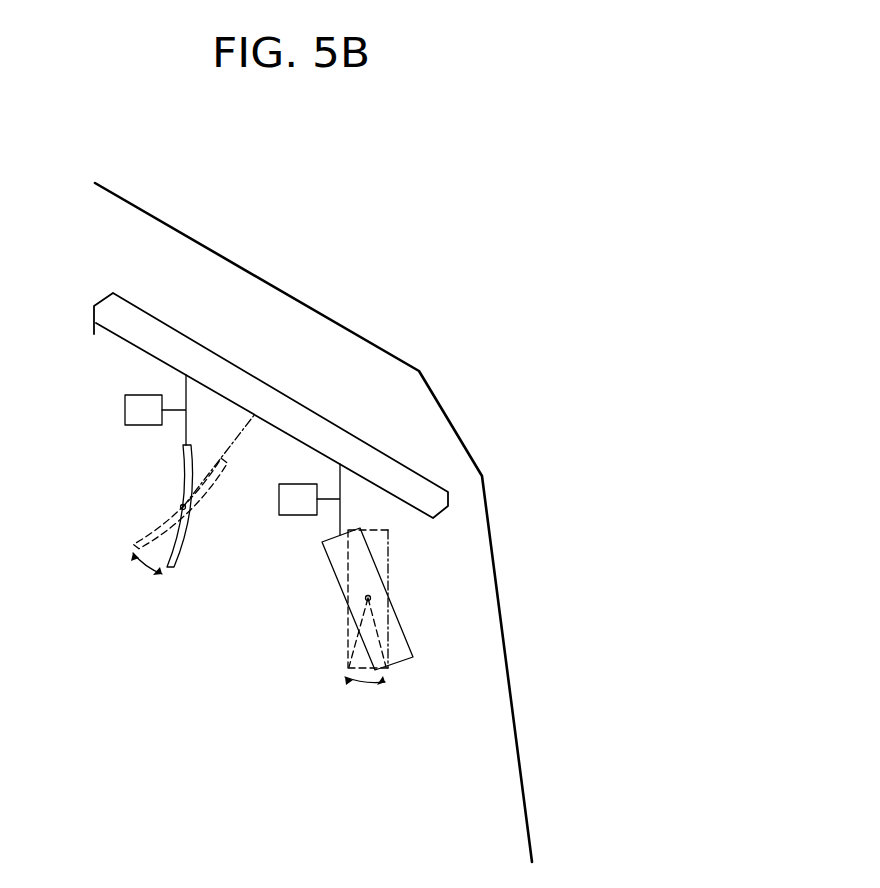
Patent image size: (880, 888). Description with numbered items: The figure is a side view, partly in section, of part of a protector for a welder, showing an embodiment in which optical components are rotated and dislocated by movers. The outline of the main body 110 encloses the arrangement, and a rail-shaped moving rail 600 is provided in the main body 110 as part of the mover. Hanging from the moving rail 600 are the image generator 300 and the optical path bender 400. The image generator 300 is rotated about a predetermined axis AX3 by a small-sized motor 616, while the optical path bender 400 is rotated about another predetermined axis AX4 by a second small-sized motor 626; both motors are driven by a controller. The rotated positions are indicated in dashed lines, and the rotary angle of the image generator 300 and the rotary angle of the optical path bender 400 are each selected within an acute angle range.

The main body 110 is at (353, 332).
The moving rail 600 is at (273, 387).
The small-sized motor 626 is at (125, 410).
The optical path bender 400 is at (183, 488).
The predetermined axis AX4 is at (186, 510).
The small-sized motor 616 is at (290, 516).
The image generator 300 is at (400, 617).
The predetermined axis AX3 is at (371, 597).